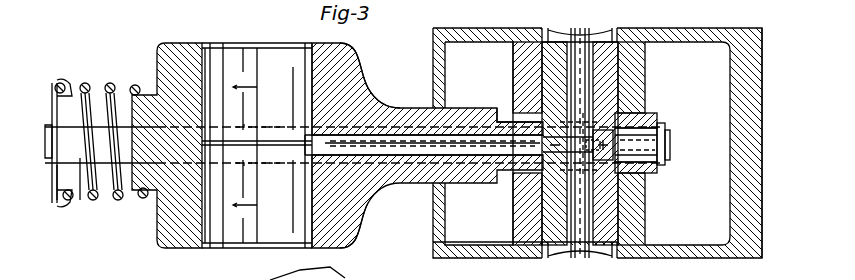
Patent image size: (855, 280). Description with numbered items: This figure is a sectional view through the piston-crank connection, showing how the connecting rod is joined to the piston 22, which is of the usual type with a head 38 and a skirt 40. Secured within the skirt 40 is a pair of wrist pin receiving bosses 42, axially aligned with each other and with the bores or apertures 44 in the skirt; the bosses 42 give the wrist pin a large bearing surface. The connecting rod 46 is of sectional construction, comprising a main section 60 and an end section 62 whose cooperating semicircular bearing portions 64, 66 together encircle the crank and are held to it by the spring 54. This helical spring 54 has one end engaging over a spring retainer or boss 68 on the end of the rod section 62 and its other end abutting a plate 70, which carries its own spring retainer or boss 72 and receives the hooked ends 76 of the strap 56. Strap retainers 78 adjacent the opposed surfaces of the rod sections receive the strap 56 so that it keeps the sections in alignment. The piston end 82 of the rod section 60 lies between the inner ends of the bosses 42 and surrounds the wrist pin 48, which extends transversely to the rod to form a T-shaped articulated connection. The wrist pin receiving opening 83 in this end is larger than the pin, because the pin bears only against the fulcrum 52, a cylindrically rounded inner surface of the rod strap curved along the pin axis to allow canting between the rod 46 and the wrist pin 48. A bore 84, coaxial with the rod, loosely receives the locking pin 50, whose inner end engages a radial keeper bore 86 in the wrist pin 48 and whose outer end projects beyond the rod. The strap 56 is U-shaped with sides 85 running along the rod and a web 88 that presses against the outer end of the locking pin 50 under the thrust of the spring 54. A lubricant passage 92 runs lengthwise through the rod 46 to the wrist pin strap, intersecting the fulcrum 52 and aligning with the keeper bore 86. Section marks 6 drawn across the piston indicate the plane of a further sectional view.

The section line 6- 6 is at (263, 145).
The piston 22 is at (500, 29).
The head 38 is at (763, 69).
The skirt 40 is at (484, 258).
The wrist pin receiving bosses 42 is at (520, 62).
The bores or apertures 44 is at (582, 30).
The connecting rod 46 is at (401, 184).
The wrist pin 48 is at (608, 72).
The locking pin 50 is at (666, 148).
The fulcrum member 52 is at (540, 145).
The spring 54 is at (88, 83).
The strap 56 is at (680, 128).
The main section 60 is at (362, 206).
The end section 62 is at (184, 48).
The semicircular strap or bearing portion 64 is at (306, 58).
The semicircular strap or bearing portion 66 is at (205, 232).
The spring retainer or boss 68 is at (148, 95).
The plate 70 is at (56, 179).
The spring retainer or boss 72 is at (54, 98).
The hooked ends 76 is at (46, 139).
The strap retainers 78 is at (272, 124).
The piston end of the rod 82 is at (486, 118).
The wrist pin receiving opening 83 is at (638, 128).
The bore 84 is at (650, 170).
The strap sides 85 is at (418, 125).
The keeper or radially disposed bore 86 is at (600, 138).
The web 88 is at (668, 160).
The lubricant passage or bore 92 is at (462, 146).